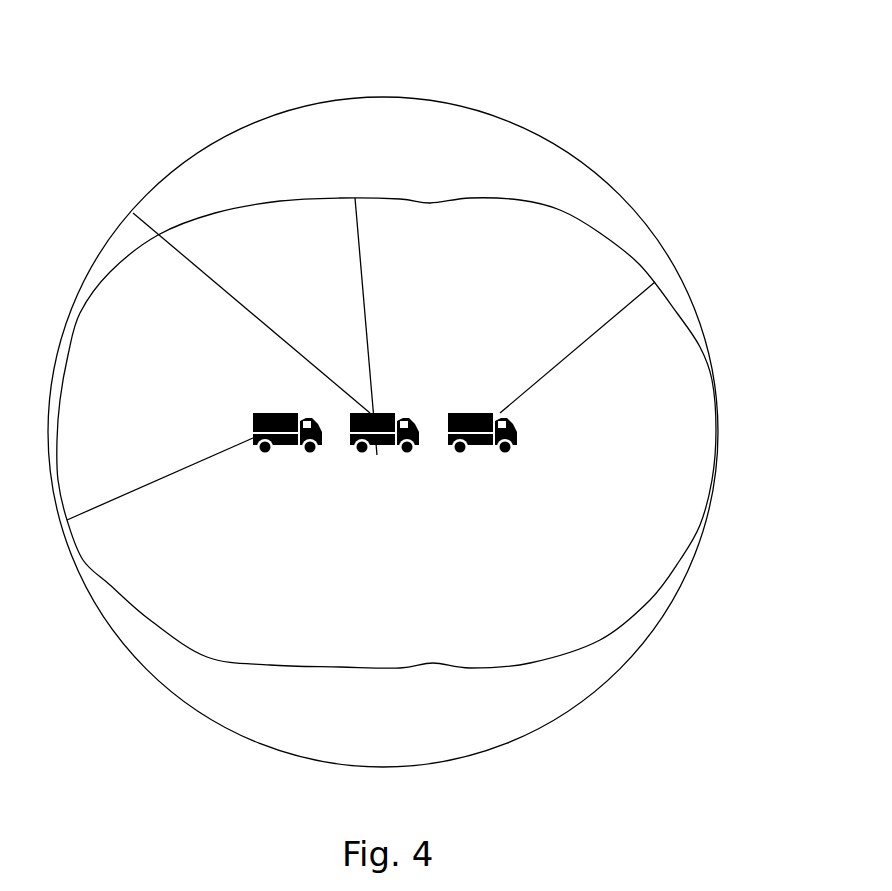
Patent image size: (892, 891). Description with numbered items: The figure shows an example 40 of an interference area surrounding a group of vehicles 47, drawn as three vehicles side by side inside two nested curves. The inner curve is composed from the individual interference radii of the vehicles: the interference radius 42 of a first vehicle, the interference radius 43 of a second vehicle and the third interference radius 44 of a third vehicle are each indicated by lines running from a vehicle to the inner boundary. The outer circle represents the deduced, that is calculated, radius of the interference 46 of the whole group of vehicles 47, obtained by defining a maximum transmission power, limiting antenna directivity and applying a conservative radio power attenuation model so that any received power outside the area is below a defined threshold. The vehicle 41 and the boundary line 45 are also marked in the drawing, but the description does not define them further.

The example of an interference area 40 is at (550, 76).
The host vehicle 41 is at (381, 445).
The interference radius of a first vehicle 42 is at (584, 355).
The interference radius of a second vehicle 43 is at (386, 433).
The third interference radius 44 is at (160, 503).
The lateral sensing boundary line 45 is at (377, 455).
The deduced radius of the interference of the group of vehicles 46 is at (174, 267).
The group of vehicles 47 is at (272, 158).